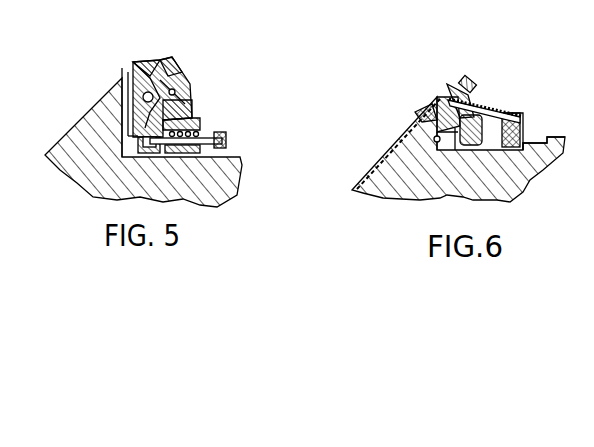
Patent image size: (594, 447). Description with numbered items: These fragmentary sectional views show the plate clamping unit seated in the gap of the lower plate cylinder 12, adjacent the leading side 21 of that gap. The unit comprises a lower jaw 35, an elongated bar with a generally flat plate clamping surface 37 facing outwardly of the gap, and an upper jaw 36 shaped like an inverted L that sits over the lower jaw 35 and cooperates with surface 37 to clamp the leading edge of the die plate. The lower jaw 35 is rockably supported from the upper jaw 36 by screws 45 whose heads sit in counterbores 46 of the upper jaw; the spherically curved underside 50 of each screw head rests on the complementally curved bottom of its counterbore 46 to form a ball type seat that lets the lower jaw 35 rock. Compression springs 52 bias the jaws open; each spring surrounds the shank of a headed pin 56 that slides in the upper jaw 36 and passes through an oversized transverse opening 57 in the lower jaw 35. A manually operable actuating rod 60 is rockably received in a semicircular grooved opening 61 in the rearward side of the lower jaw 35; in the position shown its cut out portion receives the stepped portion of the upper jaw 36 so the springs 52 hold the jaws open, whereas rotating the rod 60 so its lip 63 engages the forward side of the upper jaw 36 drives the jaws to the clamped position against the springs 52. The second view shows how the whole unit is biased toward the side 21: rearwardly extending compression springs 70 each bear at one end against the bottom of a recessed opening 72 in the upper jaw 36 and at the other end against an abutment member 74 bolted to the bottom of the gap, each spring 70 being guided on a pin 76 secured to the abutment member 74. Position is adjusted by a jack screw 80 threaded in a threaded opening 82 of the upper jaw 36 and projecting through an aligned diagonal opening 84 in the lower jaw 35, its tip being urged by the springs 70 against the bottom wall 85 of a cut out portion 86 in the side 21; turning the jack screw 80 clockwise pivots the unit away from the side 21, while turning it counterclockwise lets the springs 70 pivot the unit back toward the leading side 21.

In FIG. 6, the lower plate cylinder 12 is at (508, 190).
In FIG. 5, the leading side of the gap 21 is at (125, 152).
In FIG. 6, the leading side of the gap 21 is at (395, 132).
In FIG. 5, the lower jaw 35 is at (123, 75).
In FIG. 6, the lower jaw 35 is at (440, 130).
In FIG. 5, the upper jaw 36 is at (136, 68).
In FIG. 6, the upper jaw 36 is at (440, 92).
In FIG. 5, the plate clamping surface 37 is at (128, 76).
In FIG. 5, the screws 45 is at (177, 64).
In FIG. 5, the counterbores 46 is at (164, 62).
In FIG. 5, the underside of the screw heads 50 is at (185, 76).
In FIG. 5, the compression springs 52 is at (215, 133).
In FIG. 5, the headed pin 56 is at (223, 141).
In FIG. 5, the transverse opening 57 is at (140, 136).
In FIG. 5, the actuating rod 60 is at (190, 99).
In FIG. 5, the semicircular grooved opening 61 is at (123, 94).
In FIG. 5, the lip 63 is at (200, 120).
In FIG. 6, the compression springs 70 is at (504, 113).
In FIG. 6, the recessed opening 72 is at (474, 106).
In FIG. 6, the abutment member 74 is at (537, 139).
In FIG. 6, the pin 76 is at (522, 118).
In FIG. 6, the jack screw 80 is at (472, 80).
In FIG. 6, the threaded opening 82 is at (457, 90).
In FIG. 6, the diagonal opening 84 is at (430, 101).
In FIG. 6, the bottom wall 85 is at (415, 110).
In FIG. 6, the cut out portion 86 is at (434, 139).